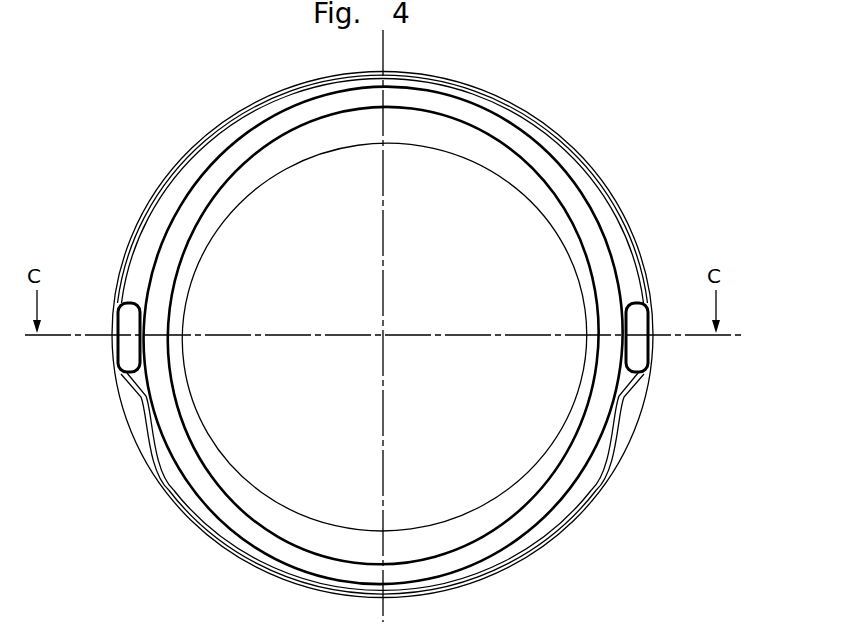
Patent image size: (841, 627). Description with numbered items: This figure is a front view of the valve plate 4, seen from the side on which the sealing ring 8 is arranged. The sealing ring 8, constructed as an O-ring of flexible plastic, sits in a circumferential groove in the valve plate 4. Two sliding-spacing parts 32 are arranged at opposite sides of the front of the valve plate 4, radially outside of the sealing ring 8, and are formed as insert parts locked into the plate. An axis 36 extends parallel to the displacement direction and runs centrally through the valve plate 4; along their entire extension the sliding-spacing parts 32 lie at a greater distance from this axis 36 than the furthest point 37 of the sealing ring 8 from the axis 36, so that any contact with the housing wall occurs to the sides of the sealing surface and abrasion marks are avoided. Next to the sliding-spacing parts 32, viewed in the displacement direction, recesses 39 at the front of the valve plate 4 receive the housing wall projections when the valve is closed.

The valve plate 4 is at (594, 131).
The sealing ring 8 is at (194, 475).
The sliding-spacing parts 32 is at (130, 351).
The axis 36 is at (384, 213).
The furthest point 37 is at (624, 330).
The recesses 39 is at (133, 400).